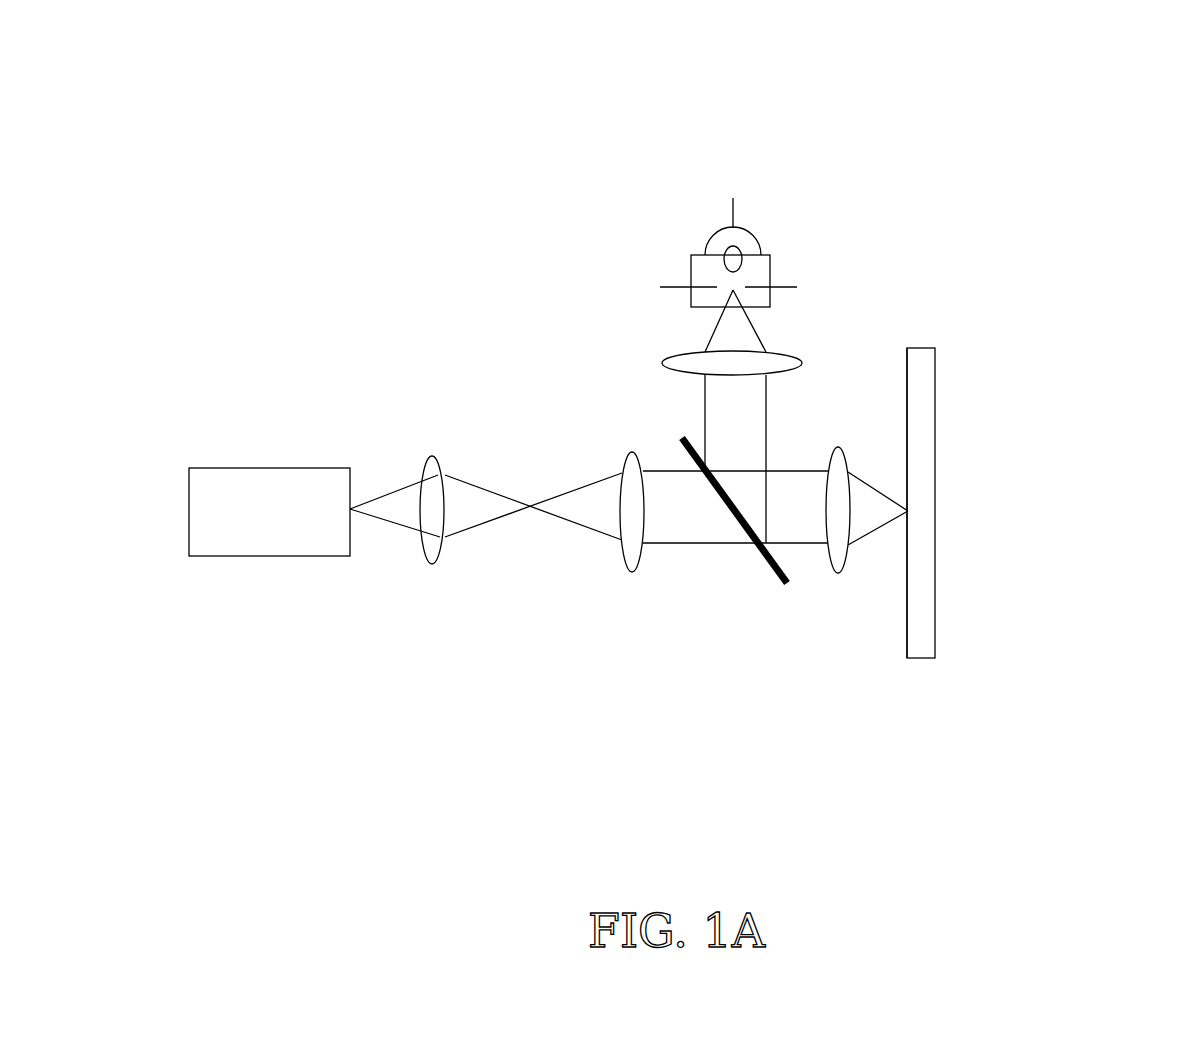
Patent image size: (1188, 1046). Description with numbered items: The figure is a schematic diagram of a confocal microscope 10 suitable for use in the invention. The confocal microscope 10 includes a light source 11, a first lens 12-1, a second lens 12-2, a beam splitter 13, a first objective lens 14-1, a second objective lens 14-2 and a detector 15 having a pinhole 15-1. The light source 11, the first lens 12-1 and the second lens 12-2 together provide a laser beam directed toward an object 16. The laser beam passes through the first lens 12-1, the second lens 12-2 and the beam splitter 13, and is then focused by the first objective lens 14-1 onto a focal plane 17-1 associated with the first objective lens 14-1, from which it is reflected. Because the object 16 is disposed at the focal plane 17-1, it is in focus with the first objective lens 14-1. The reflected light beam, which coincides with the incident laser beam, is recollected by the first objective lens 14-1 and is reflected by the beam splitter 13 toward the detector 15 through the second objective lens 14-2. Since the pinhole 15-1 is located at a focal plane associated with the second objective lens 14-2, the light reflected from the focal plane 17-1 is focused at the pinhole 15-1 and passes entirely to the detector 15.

The confocal microscope 10 is at (1008, 161).
The light source 11 is at (255, 556).
The first lens 12-1 is at (418, 543).
The second lens 12-2 is at (633, 541).
The beam splitter 13 is at (773, 568).
The first objective lens 14-1 is at (838, 537).
The second objective lens 14-2 is at (679, 367).
The detector 15 is at (708, 238).
The pinhole 15-1 is at (685, 283).
The object 16 is at (935, 438).
The focal plane 17-1 is at (907, 625).